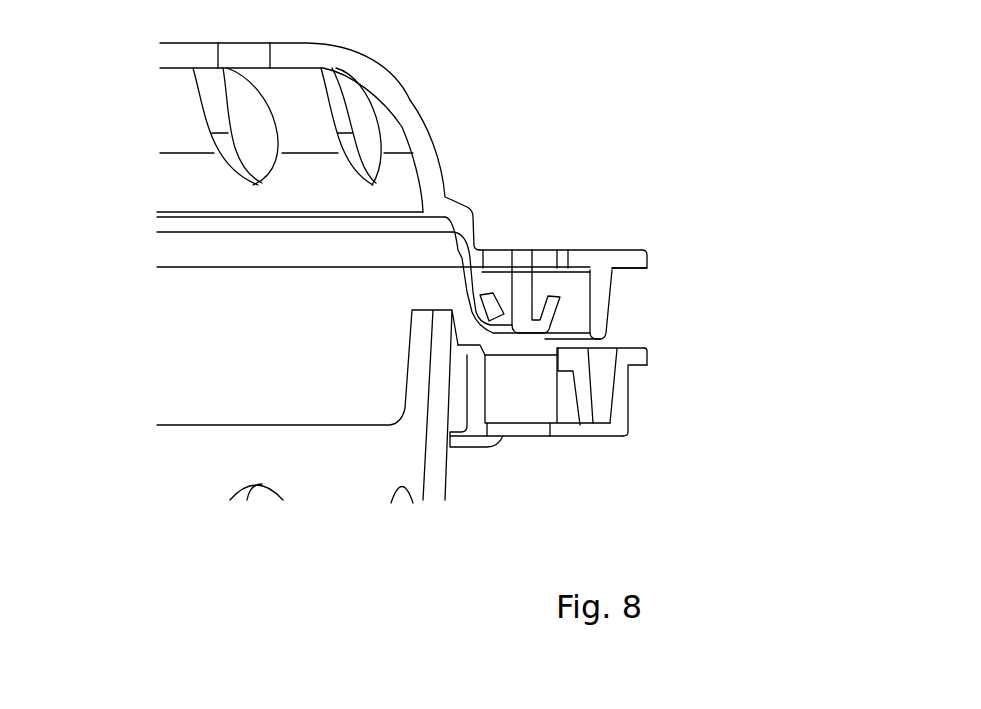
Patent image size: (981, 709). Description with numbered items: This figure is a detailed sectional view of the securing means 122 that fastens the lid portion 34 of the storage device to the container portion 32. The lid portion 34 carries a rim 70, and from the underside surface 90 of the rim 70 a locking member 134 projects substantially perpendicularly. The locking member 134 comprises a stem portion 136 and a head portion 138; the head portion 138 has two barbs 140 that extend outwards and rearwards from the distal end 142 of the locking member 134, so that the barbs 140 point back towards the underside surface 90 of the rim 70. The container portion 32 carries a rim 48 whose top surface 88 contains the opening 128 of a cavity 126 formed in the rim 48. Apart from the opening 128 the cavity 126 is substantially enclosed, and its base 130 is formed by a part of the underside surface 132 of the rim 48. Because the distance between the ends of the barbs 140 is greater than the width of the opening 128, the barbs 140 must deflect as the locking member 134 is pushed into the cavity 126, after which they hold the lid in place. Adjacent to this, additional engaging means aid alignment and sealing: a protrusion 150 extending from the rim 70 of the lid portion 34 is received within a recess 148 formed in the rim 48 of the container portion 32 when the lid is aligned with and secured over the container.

The lid portion 34 is at (356, 58).
The barbs 140 is at (486, 303).
The securing means 122 is at (533, 220).
The head portion 138 is at (513, 333).
The locking member 134 is at (525, 275).
The stem portion 136 is at (525, 298).
The rim 70 is at (649, 253).
The underside surface 90 is at (634, 273).
The protrusion 150 is at (601, 305).
The opening 128 is at (545, 357).
The top surface 88 is at (645, 350).
The rim 48 is at (648, 365).
The recess 148 is at (602, 397).
The underside surface 132 is at (533, 433).
The base 130 is at (567, 440).
The cavity 126 is at (503, 398).
The container portion 32 is at (438, 495).
The distal end 142 is at (515, 325).